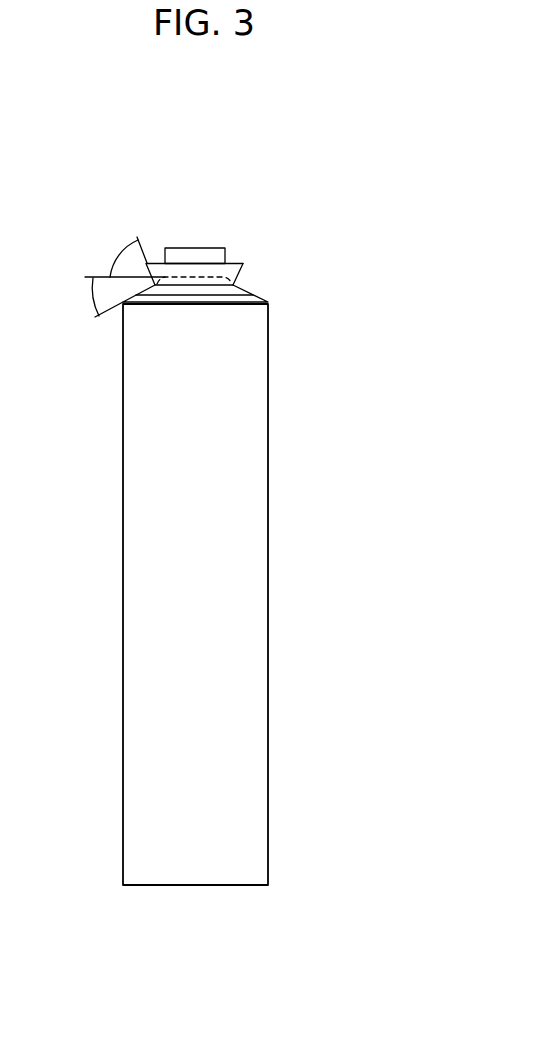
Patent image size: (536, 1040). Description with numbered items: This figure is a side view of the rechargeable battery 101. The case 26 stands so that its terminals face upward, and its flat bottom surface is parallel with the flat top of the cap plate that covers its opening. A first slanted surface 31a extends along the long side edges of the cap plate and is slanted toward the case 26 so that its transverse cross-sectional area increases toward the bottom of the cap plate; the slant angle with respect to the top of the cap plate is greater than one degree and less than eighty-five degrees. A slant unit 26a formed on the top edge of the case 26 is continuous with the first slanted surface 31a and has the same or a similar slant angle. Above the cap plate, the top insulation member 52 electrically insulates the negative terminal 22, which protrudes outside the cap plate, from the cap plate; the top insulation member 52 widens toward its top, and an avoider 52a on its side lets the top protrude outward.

The rechargeable battery 101 is at (214, 160).
The negative terminal 22 is at (203, 248).
The top insulation member 52 is at (157, 263).
The avoider 52a is at (244, 265).
The first slanted surface 31a is at (248, 286).
The slant unit 26a is at (262, 295).
The case 26 is at (268, 534).